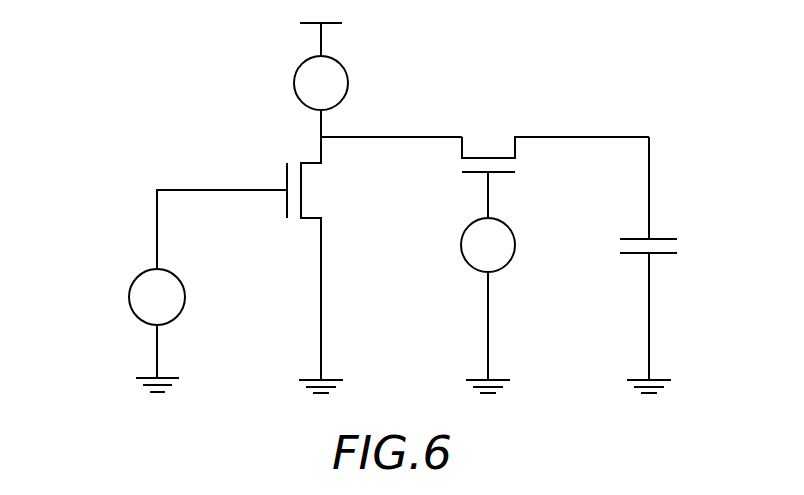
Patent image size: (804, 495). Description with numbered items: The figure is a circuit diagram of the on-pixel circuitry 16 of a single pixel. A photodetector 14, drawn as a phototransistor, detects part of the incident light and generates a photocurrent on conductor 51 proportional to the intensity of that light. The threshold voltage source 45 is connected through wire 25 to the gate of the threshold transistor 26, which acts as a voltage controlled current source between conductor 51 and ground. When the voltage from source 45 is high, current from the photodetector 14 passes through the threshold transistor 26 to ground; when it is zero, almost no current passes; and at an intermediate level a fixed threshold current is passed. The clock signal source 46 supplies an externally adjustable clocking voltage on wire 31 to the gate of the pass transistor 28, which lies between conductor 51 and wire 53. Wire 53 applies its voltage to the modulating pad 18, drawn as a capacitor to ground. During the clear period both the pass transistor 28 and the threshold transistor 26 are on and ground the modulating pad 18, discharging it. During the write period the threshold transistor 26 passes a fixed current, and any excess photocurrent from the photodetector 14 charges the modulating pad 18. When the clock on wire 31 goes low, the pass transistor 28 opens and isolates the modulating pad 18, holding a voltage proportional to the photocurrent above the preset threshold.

The photodetector 14 is at (312, 87).
The conductor 51 is at (321, 123).
The pass transistor 28 is at (486, 158).
The wire 31 is at (488, 198).
The clock signal source 46 is at (472, 244).
The threshold transistor 26 is at (295, 163).
The wire 25 is at (157, 225).
The threshold voltage source 45 is at (147, 290).
The wire 53 is at (649, 177).
The modulating pad 18 is at (632, 239).
The circuitry 16 is at (628, 107).